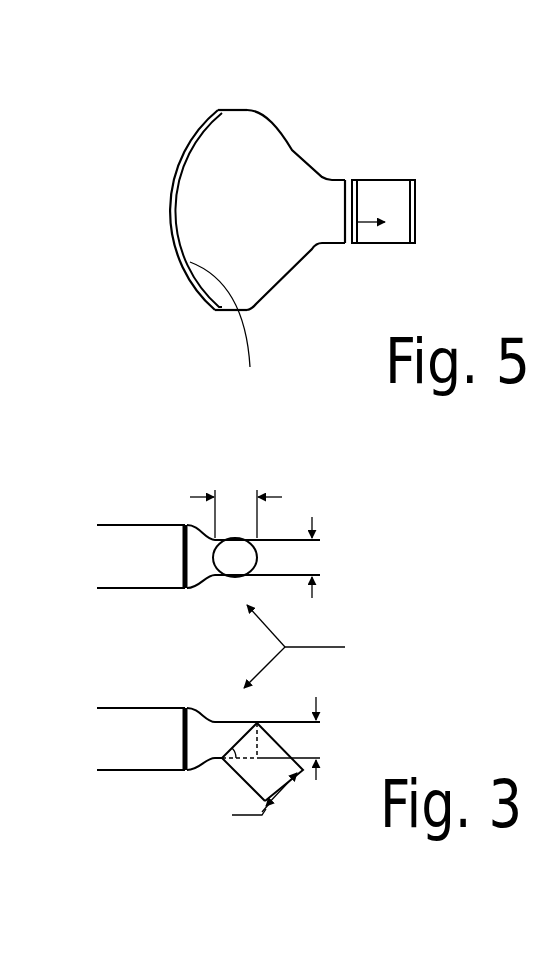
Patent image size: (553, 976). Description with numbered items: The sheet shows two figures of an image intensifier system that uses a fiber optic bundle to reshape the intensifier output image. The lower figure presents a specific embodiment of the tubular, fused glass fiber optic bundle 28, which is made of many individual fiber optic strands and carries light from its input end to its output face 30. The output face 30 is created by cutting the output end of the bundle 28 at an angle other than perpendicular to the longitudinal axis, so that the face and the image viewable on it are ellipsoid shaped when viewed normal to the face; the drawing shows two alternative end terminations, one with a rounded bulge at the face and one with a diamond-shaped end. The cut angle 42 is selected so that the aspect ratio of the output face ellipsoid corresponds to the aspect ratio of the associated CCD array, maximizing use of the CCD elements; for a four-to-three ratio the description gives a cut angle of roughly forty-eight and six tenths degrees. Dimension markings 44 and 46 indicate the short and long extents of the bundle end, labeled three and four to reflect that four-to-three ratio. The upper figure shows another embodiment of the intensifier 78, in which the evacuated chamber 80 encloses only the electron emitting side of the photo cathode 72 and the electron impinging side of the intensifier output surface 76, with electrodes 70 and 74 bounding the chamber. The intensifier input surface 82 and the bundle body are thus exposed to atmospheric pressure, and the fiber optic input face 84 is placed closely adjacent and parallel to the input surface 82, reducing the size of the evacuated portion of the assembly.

In FIG. 3, the fiber optic bundle 28 is at (197, 557).
In FIG. 3, the output face 30 is at (235, 557).
In FIG. 3, the cut angle 42 is at (243, 745).
In FIG. 3, the tube diameter dimension 44 is at (325, 557).
In FIG. 3, the bulge width dimension 46 is at (250, 481).
In FIG. 5, the glass-to-electrode joint 70 is at (348, 212).
In FIG. 5, the photo cathode 72 is at (357, 210).
In FIG. 5, the inner electrode plate 74 is at (408, 229).
In FIG. 5, the intensifier output surface 76 is at (416, 199).
In FIG. 5, the lamp bulb envelope 78 is at (231, 97).
In FIG. 5, the evacuated chamber 80 is at (372, 235).
In FIG. 5, the intensifier input surface 82 is at (193, 288).
In FIG. 5, the fiber optic input face 84 is at (225, 327).